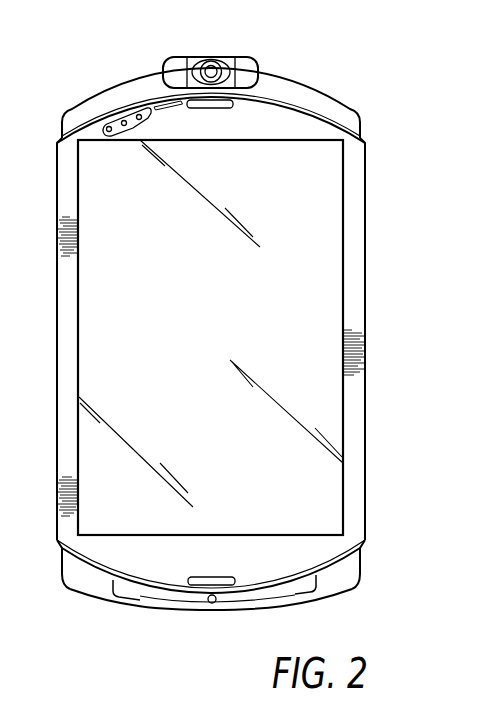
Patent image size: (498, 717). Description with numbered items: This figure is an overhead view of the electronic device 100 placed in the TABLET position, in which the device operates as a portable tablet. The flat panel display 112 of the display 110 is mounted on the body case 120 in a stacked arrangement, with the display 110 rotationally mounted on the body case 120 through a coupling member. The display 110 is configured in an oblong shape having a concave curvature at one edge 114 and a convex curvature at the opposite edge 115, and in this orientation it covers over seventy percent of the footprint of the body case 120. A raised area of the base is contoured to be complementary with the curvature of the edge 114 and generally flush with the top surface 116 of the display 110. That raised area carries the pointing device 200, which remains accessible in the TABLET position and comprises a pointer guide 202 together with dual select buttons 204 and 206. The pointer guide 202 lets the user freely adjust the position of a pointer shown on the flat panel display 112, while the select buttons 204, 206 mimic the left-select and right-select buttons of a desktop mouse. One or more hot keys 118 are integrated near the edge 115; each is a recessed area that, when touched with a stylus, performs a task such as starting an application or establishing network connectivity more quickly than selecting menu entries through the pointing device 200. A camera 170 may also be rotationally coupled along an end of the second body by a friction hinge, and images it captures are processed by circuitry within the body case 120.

The electronic device 100 is at (373, 112).
The display 110 is at (366, 263).
The flat panel display 112 is at (210, 337).
The edge 114 is at (83, 560).
The edge 115 is at (317, 115).
The top surface 116 is at (296, 547).
The hot keys 118 is at (115, 118).
The body case 120 is at (368, 582).
The camera 170 is at (213, 52).
The pointing device 200 is at (190, 614).
The pointer guide 202 is at (219, 603).
The select button 204 is at (138, 592).
The select button 206 is at (295, 588).